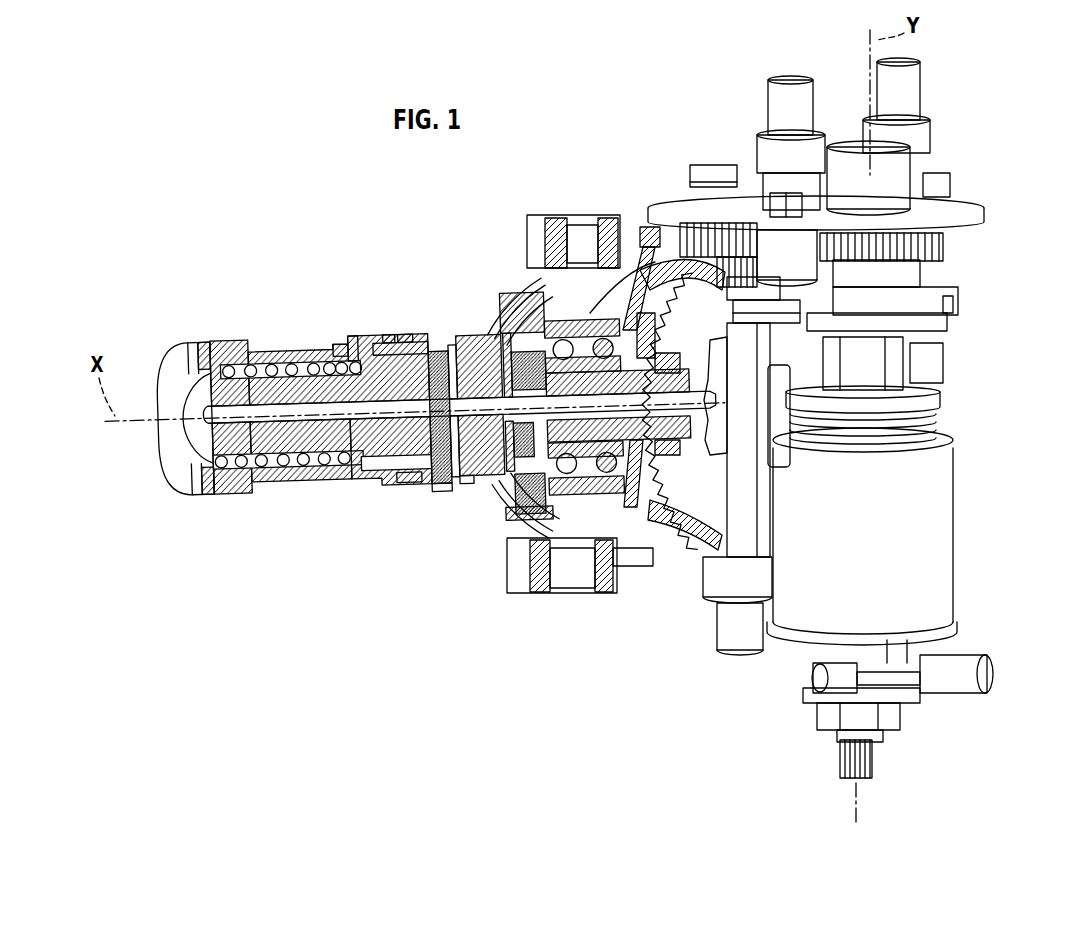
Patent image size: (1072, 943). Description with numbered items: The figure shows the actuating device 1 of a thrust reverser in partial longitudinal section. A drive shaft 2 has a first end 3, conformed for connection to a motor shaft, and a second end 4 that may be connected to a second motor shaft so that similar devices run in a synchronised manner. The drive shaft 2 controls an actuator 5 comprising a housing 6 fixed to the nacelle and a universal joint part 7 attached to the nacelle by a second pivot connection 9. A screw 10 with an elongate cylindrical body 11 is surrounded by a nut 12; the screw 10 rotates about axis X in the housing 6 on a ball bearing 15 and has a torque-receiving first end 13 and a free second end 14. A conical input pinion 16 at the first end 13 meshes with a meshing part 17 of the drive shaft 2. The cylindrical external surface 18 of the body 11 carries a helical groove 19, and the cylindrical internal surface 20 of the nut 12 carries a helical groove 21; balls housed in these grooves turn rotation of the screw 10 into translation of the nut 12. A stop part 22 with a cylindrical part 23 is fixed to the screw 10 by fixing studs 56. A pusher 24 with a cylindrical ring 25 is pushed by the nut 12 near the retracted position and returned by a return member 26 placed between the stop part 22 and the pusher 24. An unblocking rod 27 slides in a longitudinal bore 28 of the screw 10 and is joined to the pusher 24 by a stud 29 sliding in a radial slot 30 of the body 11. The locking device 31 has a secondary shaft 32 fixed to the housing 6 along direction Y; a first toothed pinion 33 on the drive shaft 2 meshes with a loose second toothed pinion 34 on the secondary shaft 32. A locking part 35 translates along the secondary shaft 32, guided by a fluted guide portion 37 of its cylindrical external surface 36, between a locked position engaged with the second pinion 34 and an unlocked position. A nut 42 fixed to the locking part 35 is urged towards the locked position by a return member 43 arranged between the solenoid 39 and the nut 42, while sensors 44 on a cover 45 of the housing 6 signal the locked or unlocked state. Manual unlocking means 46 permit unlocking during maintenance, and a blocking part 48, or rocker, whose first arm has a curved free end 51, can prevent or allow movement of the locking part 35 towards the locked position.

The actuating device 1 is at (291, 200).
The drive shaft 2 is at (733, 537).
The first end 3 is at (740, 640).
The second end 4 is at (740, 163).
The actuator 5 is at (353, 345).
The housing 6 is at (647, 548).
The universal joint part 7 is at (485, 522).
The second pivot connection 9 is at (583, 234).
The screw 10 is at (308, 442).
The body 11 is at (357, 447).
The nut 12 is at (268, 343).
The first end 13 is at (663, 358).
The second end 14 is at (215, 392).
The ball bearing 15 is at (517, 332).
The conical input pinion 16 is at (657, 520).
The meshing part 17 is at (735, 270).
The cylindrical external surface 18 is at (345, 365).
The helical groove 19 is at (335, 370).
The cylindrical internal surface 20 is at (325, 367).
The helical groove 21 is at (320, 362).
The stop part 22 is at (437, 350).
The cylindrical part 23 is at (405, 338).
The pusher 24 is at (394, 337).
The cylindrical ring 25 is at (407, 470).
The return member 26 is at (466, 465).
The unblocking rod 27 is at (570, 333).
The longitudinal bore 28 is at (258, 425).
The stud 29 is at (440, 475).
The radial slot 30 is at (455, 345).
The locking device 31 is at (962, 505).
The secondary shaft 32 is at (872, 758).
The first toothed pinion 33 is at (735, 235).
The second toothed pinion 34 is at (917, 246).
The locking part 35 is at (880, 320).
The cylindrical external surface 36 is at (847, 285).
The fluted guide portion 37 is at (940, 305).
The solenoid 39 is at (930, 578).
The nut 42 is at (935, 405).
The return member 43 is at (733, 308).
The sensors 44 is at (778, 100).
The cover 45 is at (985, 222).
The manual unlocking means 46 is at (940, 680).
The blocking part 48 is at (930, 375).
The free end 51 is at (925, 353).
The fixing studs 56 is at (530, 345).